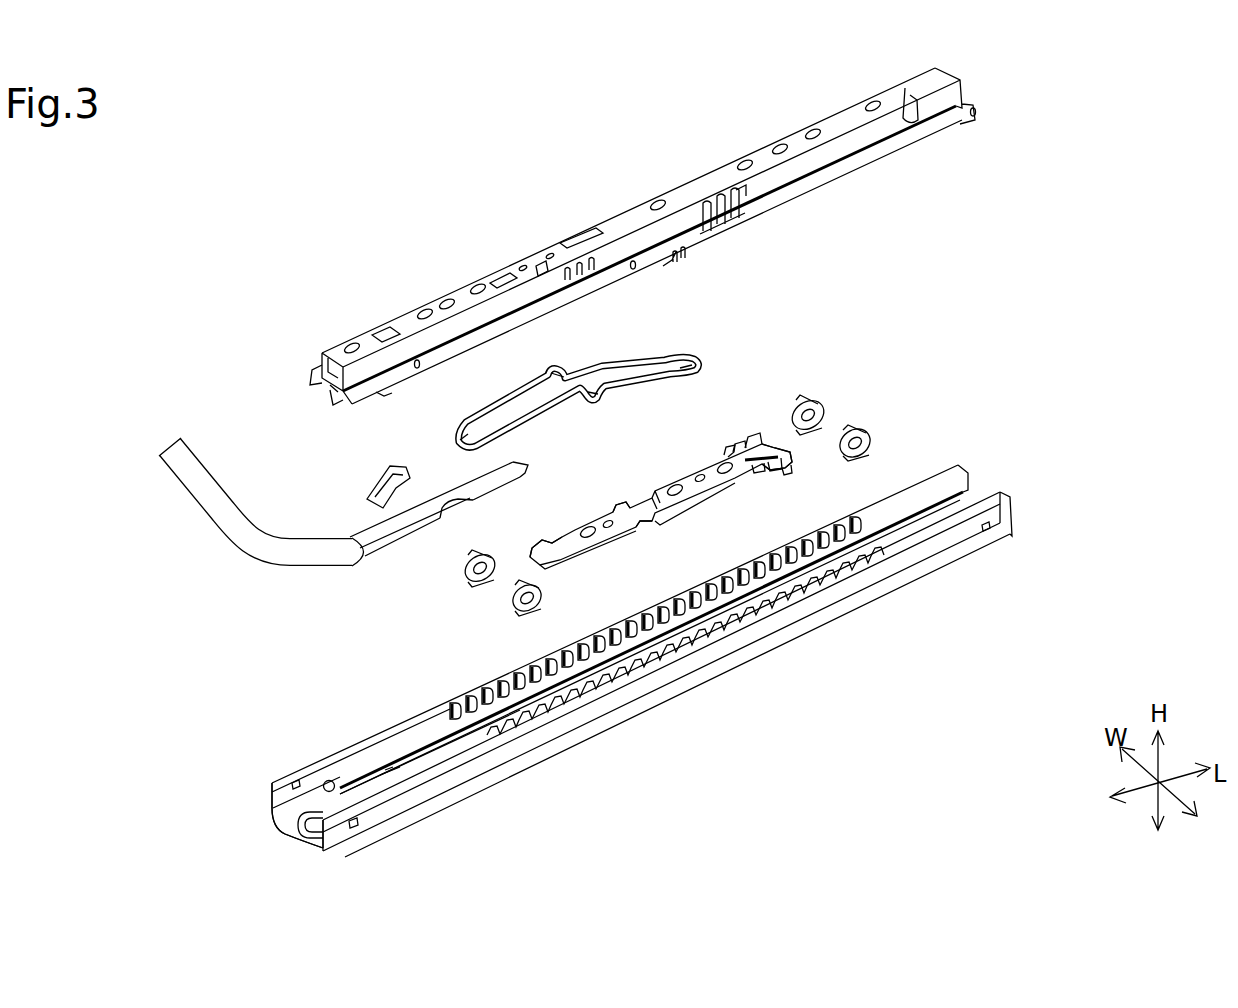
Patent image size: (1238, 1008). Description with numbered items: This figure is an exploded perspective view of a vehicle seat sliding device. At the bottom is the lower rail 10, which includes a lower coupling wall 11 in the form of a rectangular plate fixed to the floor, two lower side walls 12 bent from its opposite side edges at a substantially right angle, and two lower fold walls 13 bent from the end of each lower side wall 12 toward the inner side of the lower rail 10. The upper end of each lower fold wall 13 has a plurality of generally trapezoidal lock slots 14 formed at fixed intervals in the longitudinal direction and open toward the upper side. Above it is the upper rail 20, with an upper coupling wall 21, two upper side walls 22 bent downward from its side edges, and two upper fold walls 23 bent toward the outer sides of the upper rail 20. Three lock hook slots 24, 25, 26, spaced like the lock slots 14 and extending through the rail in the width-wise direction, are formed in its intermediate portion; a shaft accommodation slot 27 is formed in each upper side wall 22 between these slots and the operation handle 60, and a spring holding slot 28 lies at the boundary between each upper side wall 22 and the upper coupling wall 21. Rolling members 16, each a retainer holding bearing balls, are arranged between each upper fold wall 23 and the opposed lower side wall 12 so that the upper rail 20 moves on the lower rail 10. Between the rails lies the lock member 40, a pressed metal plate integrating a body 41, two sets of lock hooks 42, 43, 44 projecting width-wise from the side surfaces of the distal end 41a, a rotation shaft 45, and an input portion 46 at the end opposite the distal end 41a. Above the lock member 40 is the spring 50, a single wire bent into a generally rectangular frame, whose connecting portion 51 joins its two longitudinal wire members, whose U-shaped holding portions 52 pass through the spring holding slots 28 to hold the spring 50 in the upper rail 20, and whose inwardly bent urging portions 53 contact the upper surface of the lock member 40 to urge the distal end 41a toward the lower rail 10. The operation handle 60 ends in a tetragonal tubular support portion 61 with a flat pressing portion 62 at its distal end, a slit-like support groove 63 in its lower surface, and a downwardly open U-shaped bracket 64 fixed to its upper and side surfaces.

The lower rail 10 is at (352, 748).
The lower coupling wall 11 is at (298, 836).
The lower side walls 12 is at (271, 794).
The lower fold walls 13 is at (400, 747).
The lock slots 14 is at (450, 745).
The rolling members 16 is at (852, 430).
The upper rail 20 is at (462, 286).
The upper coupling wall 21 is at (338, 344).
The upper side walls 22 is at (349, 401).
The upper fold walls 23 is at (318, 372).
The lock hook slot 24 is at (680, 218).
The lock hook slot 25 is at (712, 201).
The lock hook slot 26 is at (730, 188).
The shaft accommodation slot 27 is at (576, 263).
The spring holding slot 28 is at (538, 265).
The lock member 40 is at (690, 496).
The body 41 is at (652, 500).
The distal end 41a is at (775, 447).
The lock hook 42 is at (726, 450).
The lock hook 43 is at (740, 444).
The lock hook 44 is at (754, 436).
The rotation shaft 45 is at (616, 506).
The input portion 46 is at (538, 546).
The spring 50 is at (625, 362).
The connecting portion 51 is at (456, 443).
The holding portions 52 is at (552, 371).
The urging portions 53 is at (692, 362).
The operation handle 60 is at (184, 492).
The support portion 61 is at (418, 543).
The pressing portion 62 is at (527, 468).
The support groove 63 is at (450, 518).
The bracket 64 is at (380, 487).